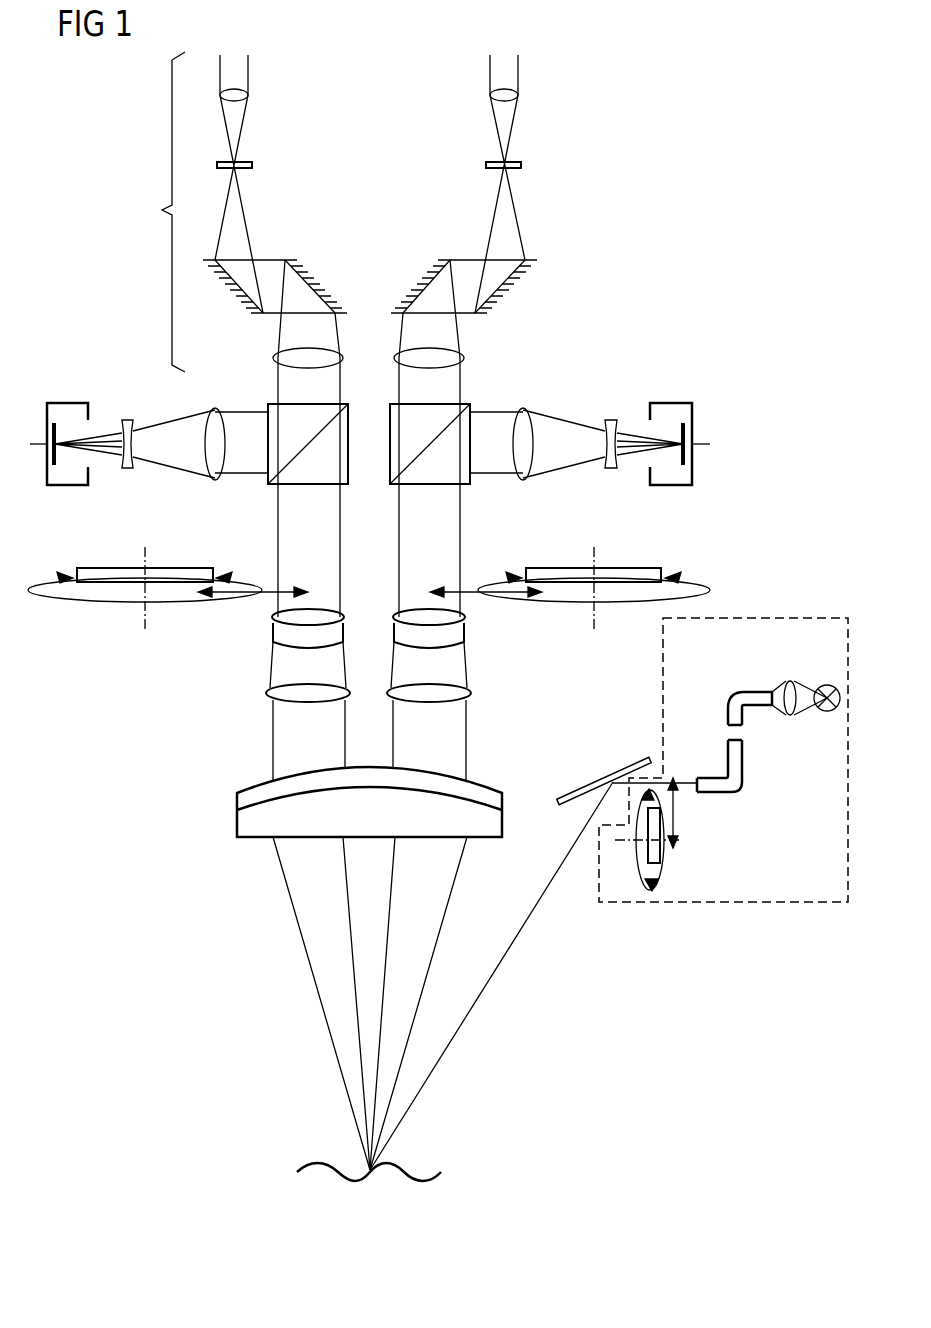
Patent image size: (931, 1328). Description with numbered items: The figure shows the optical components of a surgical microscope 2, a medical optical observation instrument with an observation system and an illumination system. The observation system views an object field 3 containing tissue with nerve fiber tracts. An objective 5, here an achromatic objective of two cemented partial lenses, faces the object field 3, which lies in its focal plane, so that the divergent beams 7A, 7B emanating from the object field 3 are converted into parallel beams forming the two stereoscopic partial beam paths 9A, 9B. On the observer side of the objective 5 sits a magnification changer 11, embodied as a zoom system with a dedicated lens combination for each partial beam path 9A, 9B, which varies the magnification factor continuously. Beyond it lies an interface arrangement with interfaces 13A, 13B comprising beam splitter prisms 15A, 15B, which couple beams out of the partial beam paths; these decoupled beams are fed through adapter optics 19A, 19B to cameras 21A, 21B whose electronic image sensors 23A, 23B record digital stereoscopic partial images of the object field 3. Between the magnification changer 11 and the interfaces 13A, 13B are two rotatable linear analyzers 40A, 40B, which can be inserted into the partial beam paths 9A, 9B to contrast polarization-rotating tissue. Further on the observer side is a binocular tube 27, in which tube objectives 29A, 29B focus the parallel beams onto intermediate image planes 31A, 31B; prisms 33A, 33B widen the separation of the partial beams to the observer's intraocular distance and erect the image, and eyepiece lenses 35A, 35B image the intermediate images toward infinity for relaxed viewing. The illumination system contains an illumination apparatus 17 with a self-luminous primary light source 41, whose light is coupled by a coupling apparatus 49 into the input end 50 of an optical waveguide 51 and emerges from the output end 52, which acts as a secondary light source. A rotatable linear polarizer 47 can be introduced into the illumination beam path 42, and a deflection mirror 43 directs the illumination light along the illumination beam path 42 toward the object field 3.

The surgical microscope 2 is at (622, 272).
The object field 3 is at (386, 1171).
The objective 5 is at (212, 758).
The divergent beam 7A is at (304, 952).
The divergent beam 7B is at (452, 893).
The stereoscopic partial beam path 9A is at (273, 735).
The stereoscopic partial beam path 9B is at (466, 735).
The magnification changer 11 is at (236, 606).
The interface 13A is at (292, 483).
The interface 13B is at (448, 483).
The beam splitter prism 15A is at (349, 475).
The beam splitter prism 15B is at (390, 435).
The illumination apparatus 17 is at (793, 618).
The adapter optics 19A is at (225, 487).
The adapter optics 19B is at (620, 400).
The camera 21A is at (78, 403).
The camera 21B is at (668, 403).
The electronic image sensor 23A is at (56, 423).
The electronic image sensor 23B is at (690, 432).
The binocular tube 27 is at (157, 212).
The tube objective 29A is at (274, 357).
The tube objective 29B is at (463, 357).
The intermediate image plane 31A is at (254, 165).
The intermediate image plane 31B is at (524, 165).
The prisms 33A is at (286, 248).
The prisms 33B is at (454, 248).
The eyepiece lens 35A is at (250, 93).
The eyepiece lens 35B is at (520, 93).
The linear analyzer 40A is at (85, 568).
The linear analyzer 40B is at (623, 568).
The primary light source 41 is at (826, 712).
The illumination beam path 42 is at (509, 948).
The deflection mirror 43 is at (614, 765).
The linear polarizer 47 is at (661, 856).
The coupling apparatus 49 is at (790, 716).
The input end 50 is at (786, 688).
The optical waveguide 51 is at (732, 690).
The output end 52 is at (694, 778).